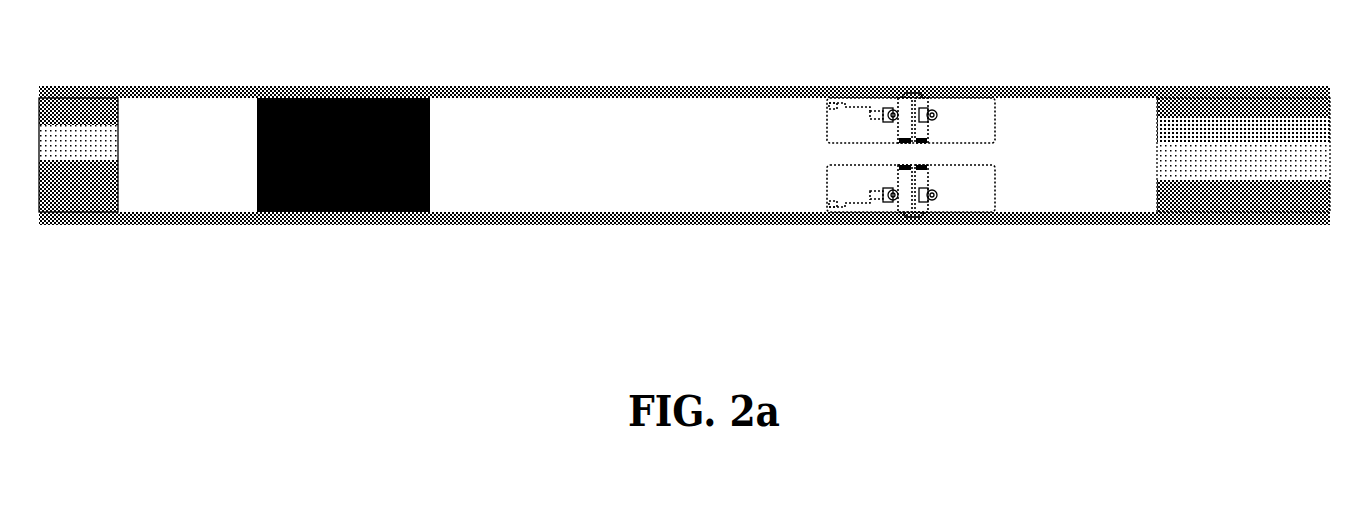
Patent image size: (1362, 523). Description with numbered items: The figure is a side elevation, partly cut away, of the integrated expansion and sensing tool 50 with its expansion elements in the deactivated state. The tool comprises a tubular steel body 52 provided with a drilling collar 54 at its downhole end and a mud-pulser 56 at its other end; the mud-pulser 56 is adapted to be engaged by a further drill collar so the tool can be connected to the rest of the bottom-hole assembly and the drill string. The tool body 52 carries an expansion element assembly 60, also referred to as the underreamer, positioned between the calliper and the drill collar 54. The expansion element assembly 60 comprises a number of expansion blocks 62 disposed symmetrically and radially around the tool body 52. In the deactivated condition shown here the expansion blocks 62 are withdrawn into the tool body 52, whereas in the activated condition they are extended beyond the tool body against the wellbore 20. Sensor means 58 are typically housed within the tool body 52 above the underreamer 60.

The integrated expansion and sensing tool 50 is at (684, 146).
The tubular steel body 52 is at (532, 200).
The drilling collar 54 is at (1265, 192).
The mud-pulser 56 is at (107, 218).
The sensor means 58 is at (323, 98).
The expansion element assembly 60 is at (891, 140).
The expansion blocks 62 is at (905, 98).
The wellbore 20 is at (923, 98).